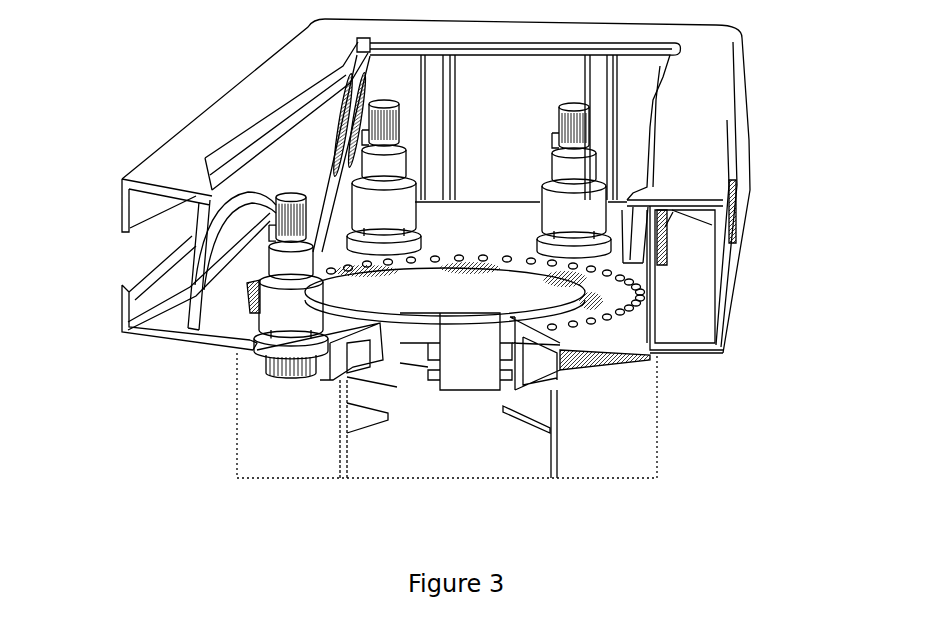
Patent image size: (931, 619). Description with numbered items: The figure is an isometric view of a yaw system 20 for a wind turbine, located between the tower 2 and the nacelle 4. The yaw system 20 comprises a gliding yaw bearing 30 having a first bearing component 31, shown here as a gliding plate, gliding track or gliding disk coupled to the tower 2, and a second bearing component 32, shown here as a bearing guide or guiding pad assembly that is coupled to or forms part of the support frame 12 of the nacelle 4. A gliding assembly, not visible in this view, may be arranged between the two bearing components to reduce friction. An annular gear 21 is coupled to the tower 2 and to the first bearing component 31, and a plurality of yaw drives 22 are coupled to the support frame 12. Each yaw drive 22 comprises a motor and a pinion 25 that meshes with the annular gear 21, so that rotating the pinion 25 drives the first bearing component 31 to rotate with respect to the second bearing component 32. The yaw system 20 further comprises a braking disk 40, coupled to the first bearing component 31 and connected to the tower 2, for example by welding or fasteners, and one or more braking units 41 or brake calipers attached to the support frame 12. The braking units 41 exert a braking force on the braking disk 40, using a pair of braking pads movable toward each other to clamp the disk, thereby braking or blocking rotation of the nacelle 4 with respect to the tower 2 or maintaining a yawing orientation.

The tower 2 is at (617, 443).
The nacelle 4 is at (760, 145).
The support frame 12 is at (228, 313).
The yaw system 20 is at (190, 364).
The annular gear 21 is at (583, 370).
The yaw drives 22 is at (297, 165).
The pinion 25 is at (290, 372).
The gliding yaw bearing 30 is at (402, 377).
The first bearing component 31 is at (533, 423).
The second bearing component 32 is at (513, 372).
The braking disk 40 is at (375, 430).
The braking units 41 is at (475, 390).